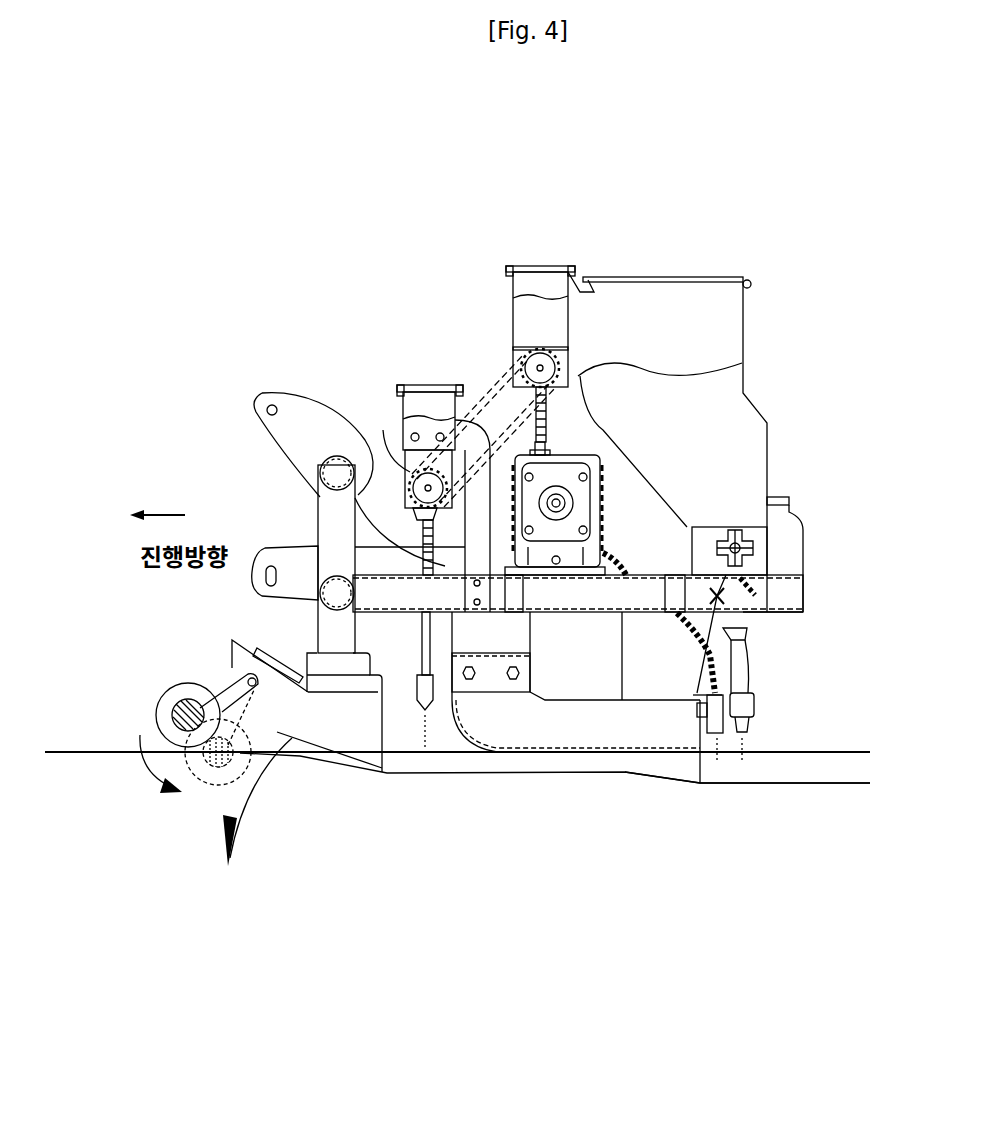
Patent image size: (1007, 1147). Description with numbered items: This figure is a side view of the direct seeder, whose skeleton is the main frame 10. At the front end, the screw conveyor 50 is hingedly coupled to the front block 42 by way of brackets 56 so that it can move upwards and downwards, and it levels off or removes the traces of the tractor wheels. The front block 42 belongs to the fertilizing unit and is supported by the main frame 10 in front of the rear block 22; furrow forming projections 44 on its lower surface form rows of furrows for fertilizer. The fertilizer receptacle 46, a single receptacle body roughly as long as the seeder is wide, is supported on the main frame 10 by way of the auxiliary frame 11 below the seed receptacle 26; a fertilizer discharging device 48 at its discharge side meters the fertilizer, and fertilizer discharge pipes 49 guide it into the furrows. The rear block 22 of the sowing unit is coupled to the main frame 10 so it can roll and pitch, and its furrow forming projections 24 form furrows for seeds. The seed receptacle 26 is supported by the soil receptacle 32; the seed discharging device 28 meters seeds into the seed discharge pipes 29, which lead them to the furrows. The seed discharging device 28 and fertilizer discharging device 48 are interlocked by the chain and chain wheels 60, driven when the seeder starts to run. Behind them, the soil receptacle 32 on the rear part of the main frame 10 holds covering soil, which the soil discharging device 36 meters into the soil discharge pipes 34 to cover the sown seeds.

The main frame 10 is at (620, 597).
The auxiliary frame 11 is at (333, 470).
The rear block 22 is at (572, 737).
The furrow forming projections 24 is at (690, 765).
The seed receptacle 26 is at (560, 268).
The seed discharging device 28 is at (578, 377).
The seed discharge pipes 29 is at (722, 680).
The soil receptacle 32 is at (745, 326).
The soil discharge pipes 34 is at (736, 604).
The soil discharging device 36 is at (757, 543).
The front block 42 is at (382, 727).
The furrow forming projections 44 is at (362, 757).
The fertilizer receptacle 46 is at (424, 385).
The fertilizer discharging device 48 is at (383, 430).
The fertilizer discharge pipes 49 is at (408, 630).
The screw conveyor 50 is at (148, 716).
The brackets 56 is at (225, 700).
The chain and chain wheels 60 is at (504, 356).